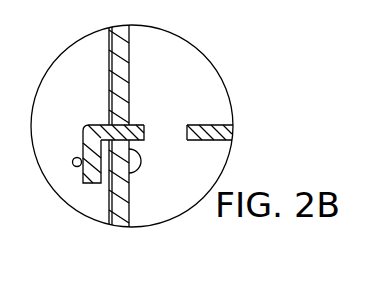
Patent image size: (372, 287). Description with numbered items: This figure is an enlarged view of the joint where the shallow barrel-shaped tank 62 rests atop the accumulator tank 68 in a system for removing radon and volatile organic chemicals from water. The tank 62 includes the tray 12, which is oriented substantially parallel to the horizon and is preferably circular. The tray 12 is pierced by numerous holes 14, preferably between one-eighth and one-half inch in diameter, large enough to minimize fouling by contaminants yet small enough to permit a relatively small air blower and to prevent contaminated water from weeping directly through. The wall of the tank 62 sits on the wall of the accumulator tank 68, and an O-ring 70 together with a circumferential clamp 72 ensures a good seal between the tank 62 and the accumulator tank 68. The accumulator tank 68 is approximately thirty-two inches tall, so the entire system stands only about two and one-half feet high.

The tray 12 is at (200, 141).
The holes 14 is at (163, 127).
The tank 62 is at (108, 92).
The accumulator tank 68 is at (129, 203).
The O-ring 70 is at (140, 166).
The circumferential clamp 72 is at (73, 161).